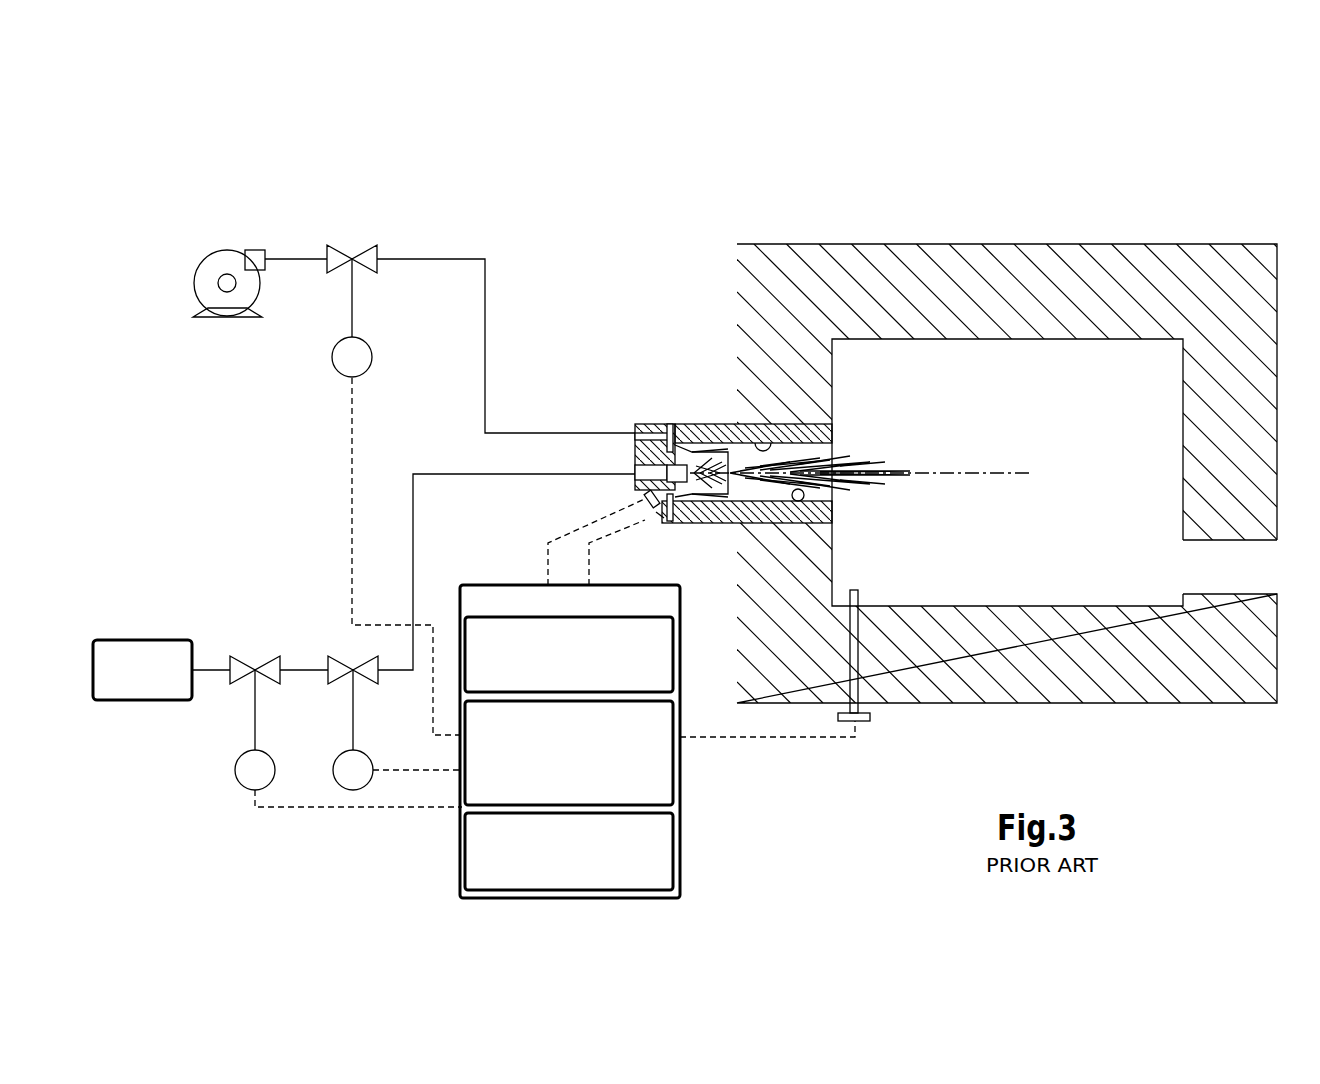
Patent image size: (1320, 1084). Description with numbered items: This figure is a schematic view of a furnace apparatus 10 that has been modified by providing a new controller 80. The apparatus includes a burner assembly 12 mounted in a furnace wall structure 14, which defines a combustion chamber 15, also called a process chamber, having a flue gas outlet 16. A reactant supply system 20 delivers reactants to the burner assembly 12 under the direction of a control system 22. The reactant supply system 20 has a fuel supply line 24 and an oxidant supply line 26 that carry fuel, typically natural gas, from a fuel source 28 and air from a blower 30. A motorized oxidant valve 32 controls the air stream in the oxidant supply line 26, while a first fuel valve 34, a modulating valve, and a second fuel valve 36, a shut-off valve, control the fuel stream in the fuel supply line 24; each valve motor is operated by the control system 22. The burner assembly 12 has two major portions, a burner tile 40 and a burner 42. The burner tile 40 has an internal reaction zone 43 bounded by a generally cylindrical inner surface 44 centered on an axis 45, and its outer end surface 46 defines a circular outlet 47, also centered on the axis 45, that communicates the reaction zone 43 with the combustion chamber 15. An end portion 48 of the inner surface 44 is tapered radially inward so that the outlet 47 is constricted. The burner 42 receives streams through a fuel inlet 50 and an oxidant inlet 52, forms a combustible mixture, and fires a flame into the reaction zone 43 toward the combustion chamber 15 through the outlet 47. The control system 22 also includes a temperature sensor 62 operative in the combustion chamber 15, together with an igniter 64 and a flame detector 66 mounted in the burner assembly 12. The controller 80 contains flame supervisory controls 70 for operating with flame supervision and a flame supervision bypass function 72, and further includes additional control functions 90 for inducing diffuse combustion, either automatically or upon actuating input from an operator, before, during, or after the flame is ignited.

The furnace apparatus 10 is at (412, 128).
The burner assembly 12 is at (793, 433).
The furnace wall structure 14 is at (841, 278).
The combustion chamber 15 is at (994, 403).
The flue gas outlet 16 is at (1190, 565).
The reactant supply system 20 is at (414, 305).
The control system 22 is at (632, 741).
The fuel supply line 24 is at (414, 557).
The oxidant supply line 26 is at (446, 259).
The fuel source 28 is at (169, 651).
The blower 30 is at (222, 262).
The motorized oxidant valve 32 is at (369, 248).
The first motorized fuel valve 34 is at (251, 661).
The second motorized fuel valve 36 is at (341, 658).
The burner tile 40 is at (708, 423).
The burner 42 is at (656, 423).
The reaction zone 43 is at (802, 447).
The inner surface 44 is at (764, 442).
The axis 45 is at (716, 524).
The outer end surface 46 is at (834, 443).
The outlet 47 is at (868, 507).
The end portion 48 is at (805, 498).
The fuel inlet 50 is at (636, 468).
The oxidant inlet 52 is at (636, 430).
The temperature sensor 62 is at (872, 723).
The igniter 64 is at (660, 521).
The flame detector 66 is at (643, 497).
The flame supervisory controls 70 is at (660, 680).
The flame supervision bypass function 72 is at (656, 777).
The controller 80 is at (460, 825).
The additional control functions 90 is at (651, 843).